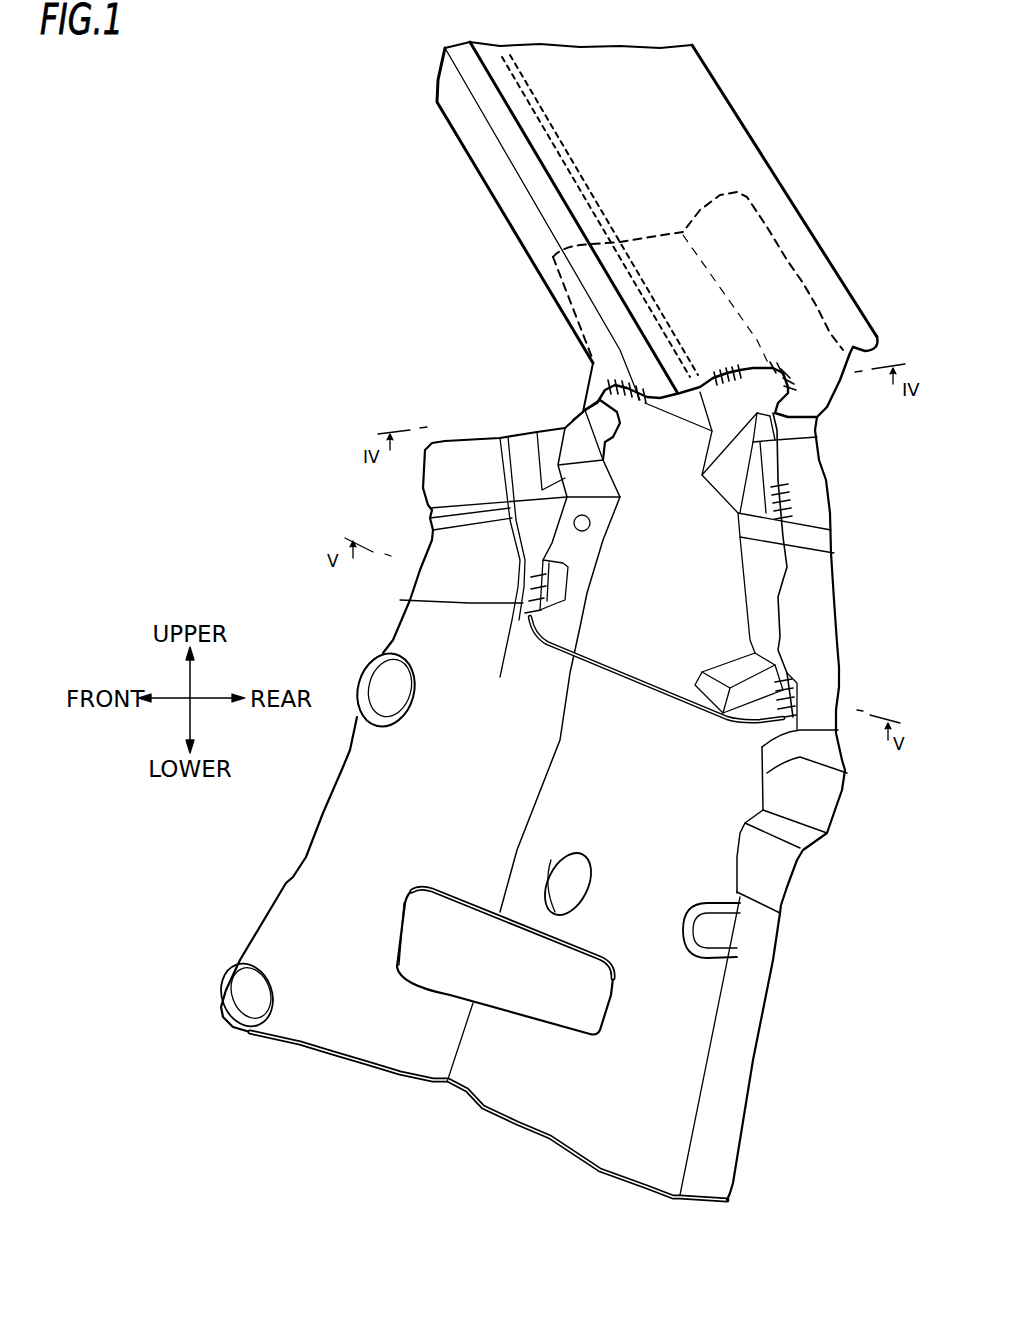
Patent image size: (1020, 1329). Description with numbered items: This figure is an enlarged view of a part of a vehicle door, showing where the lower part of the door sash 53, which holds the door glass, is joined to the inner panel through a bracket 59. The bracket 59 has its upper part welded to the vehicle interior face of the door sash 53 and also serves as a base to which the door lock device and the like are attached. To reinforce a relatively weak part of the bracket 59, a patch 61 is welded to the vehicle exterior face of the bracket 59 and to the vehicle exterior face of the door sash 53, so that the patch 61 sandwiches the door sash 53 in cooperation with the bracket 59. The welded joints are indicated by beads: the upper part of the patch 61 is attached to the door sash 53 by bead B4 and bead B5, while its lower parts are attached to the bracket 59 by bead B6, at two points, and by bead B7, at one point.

The door sash 53 is at (732, 155).
The bead B5 is at (740, 373).
The bead B4 is at (612, 390).
The patch 61 is at (733, 478).
The bead B7 is at (440, 603).
The bead B6 is at (797, 683).
The bracket 59 is at (720, 867).